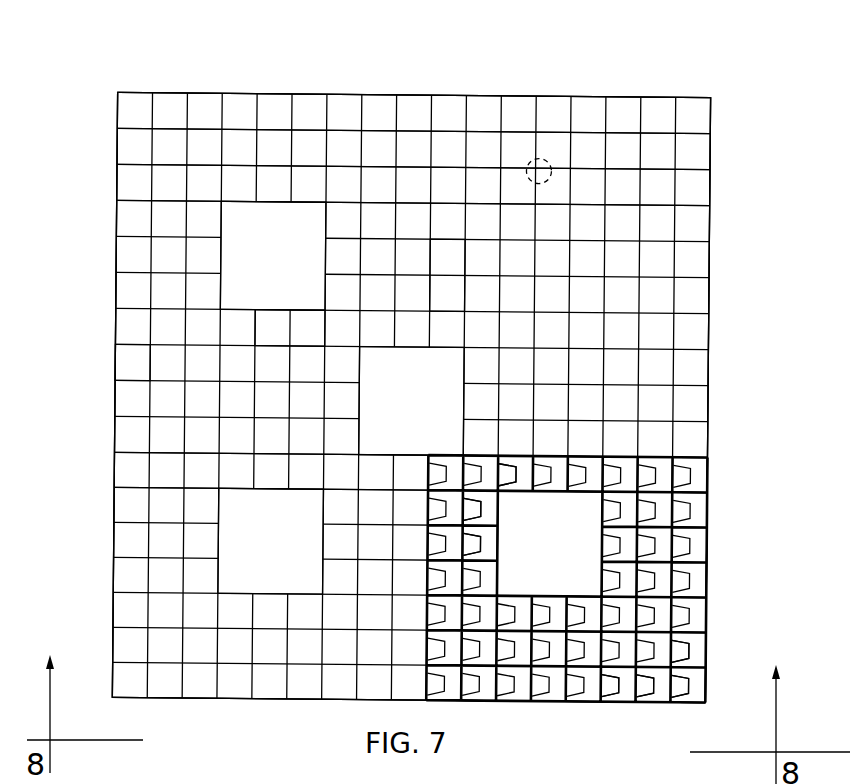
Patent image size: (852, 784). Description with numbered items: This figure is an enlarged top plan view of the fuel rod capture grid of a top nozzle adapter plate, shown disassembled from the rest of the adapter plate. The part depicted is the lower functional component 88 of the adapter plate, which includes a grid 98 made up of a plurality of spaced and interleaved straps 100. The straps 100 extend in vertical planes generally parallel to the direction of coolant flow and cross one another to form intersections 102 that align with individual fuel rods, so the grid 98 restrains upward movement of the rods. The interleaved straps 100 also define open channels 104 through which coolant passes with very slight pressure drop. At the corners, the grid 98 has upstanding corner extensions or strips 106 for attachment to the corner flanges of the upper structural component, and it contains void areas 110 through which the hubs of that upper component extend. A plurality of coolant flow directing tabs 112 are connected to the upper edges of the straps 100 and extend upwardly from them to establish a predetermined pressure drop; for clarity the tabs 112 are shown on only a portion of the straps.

The lower functional component 88 is at (614, 84).
The grid 98 is at (712, 251).
The straps 100 is at (406, 132).
The intersections 102 is at (357, 277).
The open channels 104 is at (162, 358).
The corner extensions or strips 106 is at (145, 90).
The void areas 110 is at (284, 248).
The tabs 112 is at (472, 540).